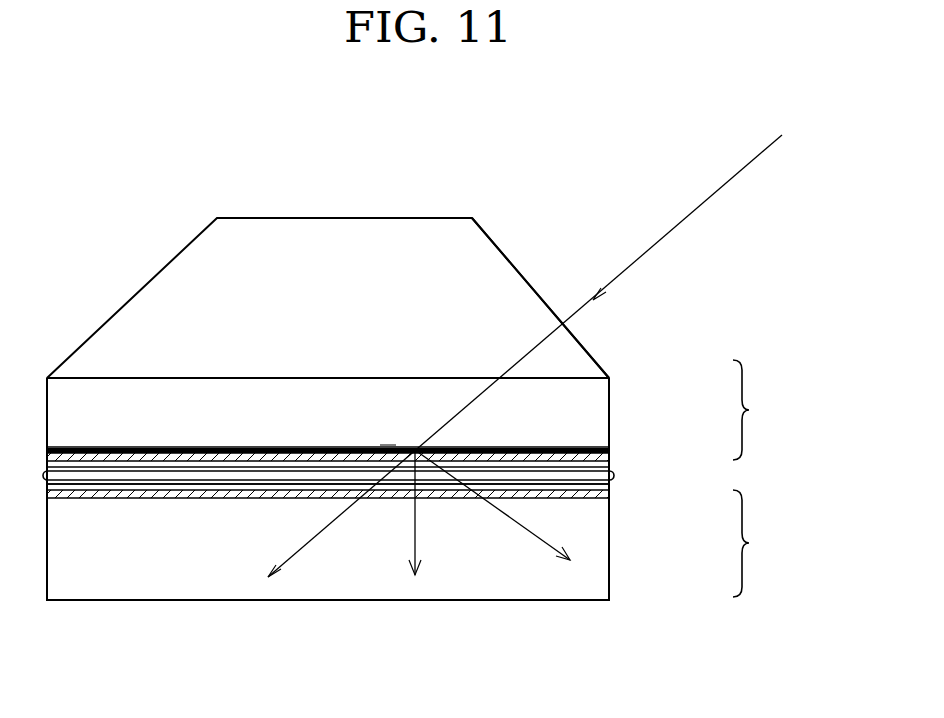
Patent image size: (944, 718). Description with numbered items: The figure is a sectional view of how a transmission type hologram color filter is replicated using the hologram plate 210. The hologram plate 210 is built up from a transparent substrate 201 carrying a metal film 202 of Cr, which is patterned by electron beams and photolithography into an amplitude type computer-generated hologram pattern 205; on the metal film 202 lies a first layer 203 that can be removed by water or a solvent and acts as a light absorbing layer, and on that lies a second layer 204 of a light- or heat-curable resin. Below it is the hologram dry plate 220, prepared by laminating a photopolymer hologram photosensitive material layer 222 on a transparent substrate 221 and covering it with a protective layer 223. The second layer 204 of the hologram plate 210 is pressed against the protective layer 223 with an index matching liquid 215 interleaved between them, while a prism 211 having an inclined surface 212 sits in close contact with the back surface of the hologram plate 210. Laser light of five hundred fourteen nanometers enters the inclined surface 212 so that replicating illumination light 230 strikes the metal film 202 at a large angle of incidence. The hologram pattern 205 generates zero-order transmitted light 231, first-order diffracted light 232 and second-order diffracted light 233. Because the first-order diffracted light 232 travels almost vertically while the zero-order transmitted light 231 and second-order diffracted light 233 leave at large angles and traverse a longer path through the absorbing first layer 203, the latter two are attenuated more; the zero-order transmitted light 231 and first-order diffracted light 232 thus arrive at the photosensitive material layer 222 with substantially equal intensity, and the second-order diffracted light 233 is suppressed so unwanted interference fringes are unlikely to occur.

The transparent substrate 201 is at (604, 390).
The metal film 202 is at (610, 449).
The first layer 203 is at (610, 457).
The second layer 204 is at (610, 465).
The amplitude type computer-generated hologram pattern 205 is at (389, 420).
The hologram plate 210 is at (424, 409).
The prism 211 is at (333, 232).
The inclined surface 212 is at (503, 250).
The index matching liquid 215 is at (616, 476).
The hologram dry plate 220 is at (428, 542).
The transparent substrate 221 is at (604, 568).
The hologram photosensitive material layer 222 is at (610, 497).
The protective layer 223 is at (610, 488).
The replicating illumination light 230 is at (693, 212).
The zero-order transmitted light 231 is at (317, 533).
The first-order diffracted light 232 is at (416, 529).
The second-order diffracted light 233 is at (522, 529).